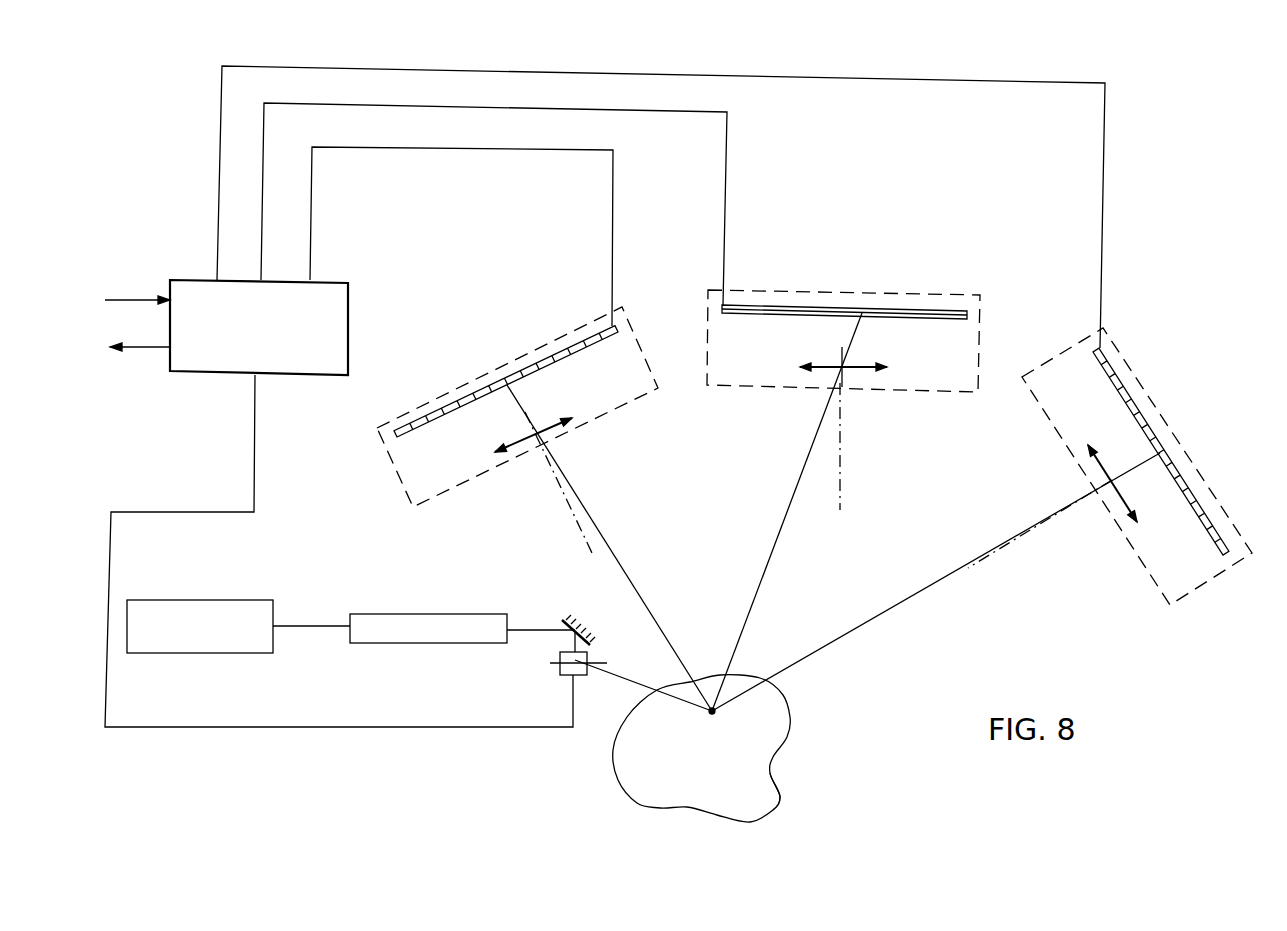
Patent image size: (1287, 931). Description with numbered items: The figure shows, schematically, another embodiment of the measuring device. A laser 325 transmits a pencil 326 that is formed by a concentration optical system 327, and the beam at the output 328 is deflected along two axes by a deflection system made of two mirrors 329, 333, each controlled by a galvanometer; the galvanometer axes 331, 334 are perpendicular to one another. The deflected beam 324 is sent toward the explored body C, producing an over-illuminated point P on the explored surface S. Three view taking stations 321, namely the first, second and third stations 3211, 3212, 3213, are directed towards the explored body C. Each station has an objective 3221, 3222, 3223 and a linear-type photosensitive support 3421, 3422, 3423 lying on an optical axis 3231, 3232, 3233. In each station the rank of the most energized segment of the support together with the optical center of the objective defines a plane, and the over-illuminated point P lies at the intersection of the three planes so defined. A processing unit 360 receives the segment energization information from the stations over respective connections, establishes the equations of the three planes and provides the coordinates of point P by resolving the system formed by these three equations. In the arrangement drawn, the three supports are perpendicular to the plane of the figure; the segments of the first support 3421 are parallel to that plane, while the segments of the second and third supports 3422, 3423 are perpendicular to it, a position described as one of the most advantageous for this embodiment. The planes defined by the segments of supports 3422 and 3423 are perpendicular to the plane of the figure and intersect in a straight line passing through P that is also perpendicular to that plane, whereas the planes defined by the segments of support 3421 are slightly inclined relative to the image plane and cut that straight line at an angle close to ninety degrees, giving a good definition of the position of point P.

The processing unit 360 is at (220, 365).
The laser 325 is at (220, 612).
The pencil 326 is at (333, 606).
The concentration optical system 327 is at (437, 623).
The output 328 is at (508, 626).
The axis 331 is at (578, 618).
The mirror 329 is at (590, 640).
The mirror 333 is at (567, 668).
The axis 334 is at (603, 662).
The incident light beam 324 is at (617, 683).
The view taking stations 321 is at (814, 473).
The first view taking station 3211 is at (907, 292).
The second view taking station 3212 is at (425, 403).
The third view taking station 3213 is at (1167, 430).
The first photosensitive support 3421 is at (773, 306).
The second photosensitive support 3422 is at (537, 362).
The third photosensitive support 3423 is at (1122, 382).
The first objective 3221 is at (863, 372).
The second objective 3222 is at (555, 428).
The third objective 3223 is at (1107, 477).
The first optical axis 3231 is at (842, 486).
The second optical axis 3232 is at (583, 537).
The third optical axis 3233 is at (990, 557).
The explored body C is at (612, 776).
The explored surface S is at (752, 802).
The over-illuminated point P is at (722, 720).